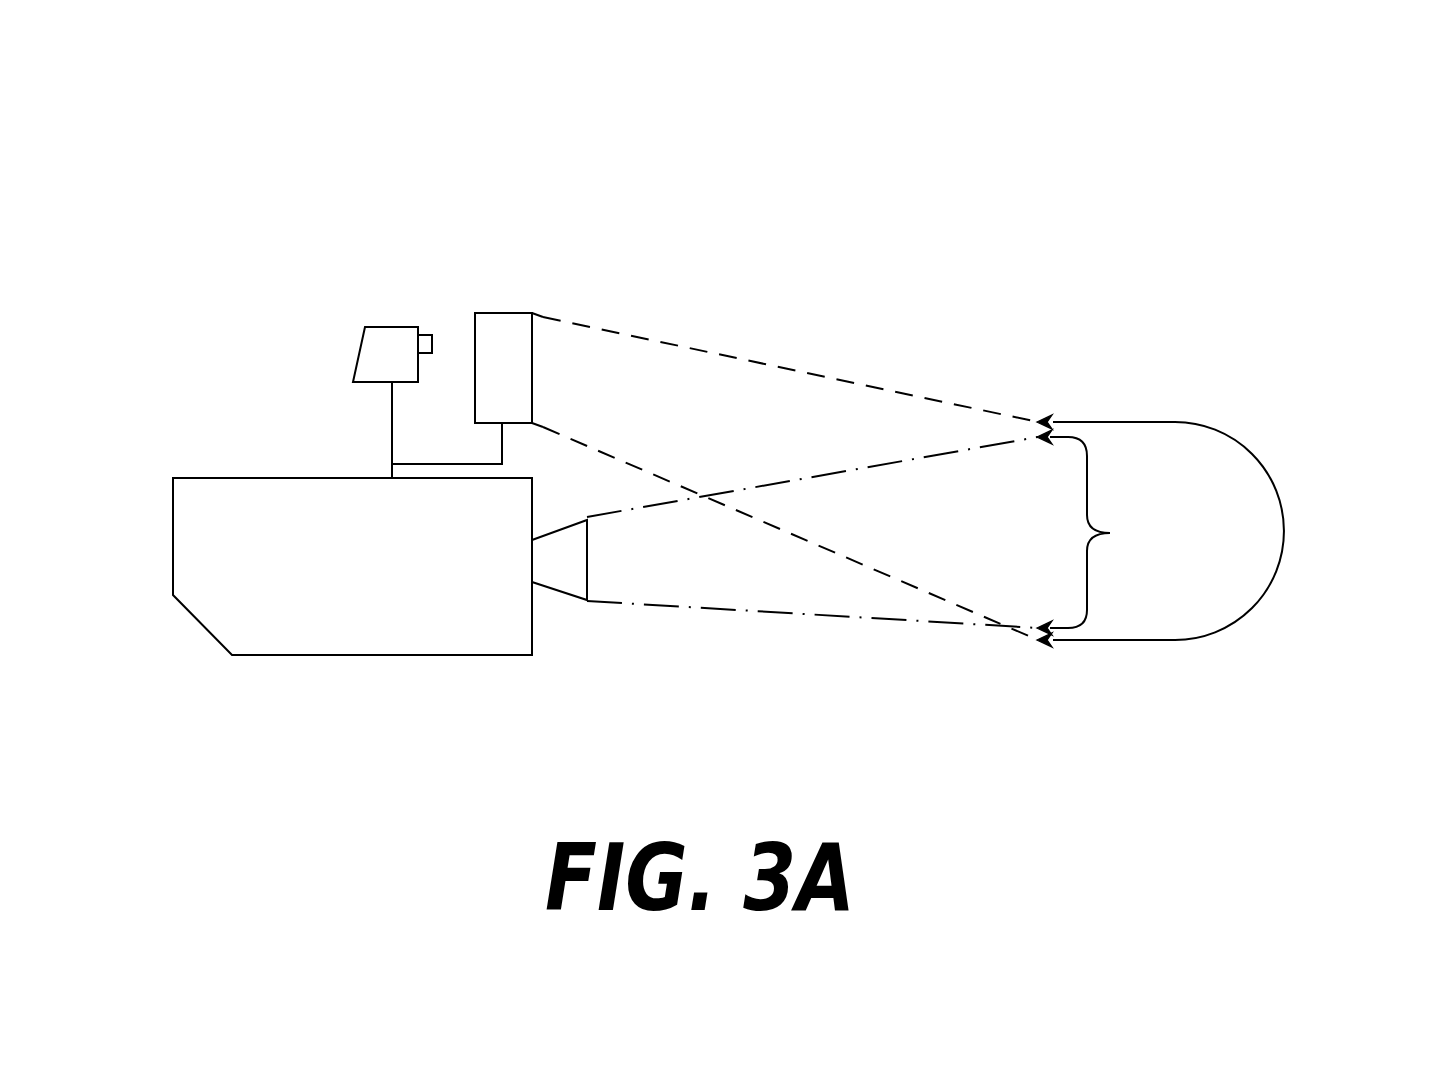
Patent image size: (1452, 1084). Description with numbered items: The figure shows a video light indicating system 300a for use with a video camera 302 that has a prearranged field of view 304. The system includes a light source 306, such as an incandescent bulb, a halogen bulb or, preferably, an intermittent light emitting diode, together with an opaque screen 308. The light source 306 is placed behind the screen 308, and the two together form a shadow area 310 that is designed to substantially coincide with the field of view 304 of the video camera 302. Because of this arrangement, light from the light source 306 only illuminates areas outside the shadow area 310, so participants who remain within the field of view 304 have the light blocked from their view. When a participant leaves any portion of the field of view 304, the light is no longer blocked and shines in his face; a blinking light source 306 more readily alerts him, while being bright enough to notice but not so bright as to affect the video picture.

The video light indicating system 300a is at (1408, 110).
The video camera 302 is at (348, 655).
The field of view 304 is at (1125, 532).
The light source 306 is at (357, 353).
The opaque screen 308 is at (507, 313).
The shadow area 310 is at (1284, 533).